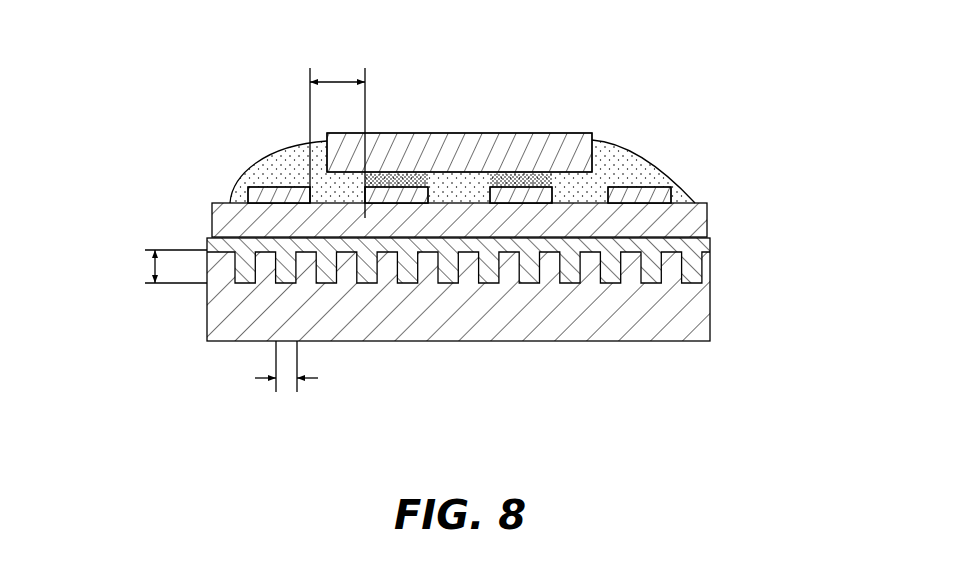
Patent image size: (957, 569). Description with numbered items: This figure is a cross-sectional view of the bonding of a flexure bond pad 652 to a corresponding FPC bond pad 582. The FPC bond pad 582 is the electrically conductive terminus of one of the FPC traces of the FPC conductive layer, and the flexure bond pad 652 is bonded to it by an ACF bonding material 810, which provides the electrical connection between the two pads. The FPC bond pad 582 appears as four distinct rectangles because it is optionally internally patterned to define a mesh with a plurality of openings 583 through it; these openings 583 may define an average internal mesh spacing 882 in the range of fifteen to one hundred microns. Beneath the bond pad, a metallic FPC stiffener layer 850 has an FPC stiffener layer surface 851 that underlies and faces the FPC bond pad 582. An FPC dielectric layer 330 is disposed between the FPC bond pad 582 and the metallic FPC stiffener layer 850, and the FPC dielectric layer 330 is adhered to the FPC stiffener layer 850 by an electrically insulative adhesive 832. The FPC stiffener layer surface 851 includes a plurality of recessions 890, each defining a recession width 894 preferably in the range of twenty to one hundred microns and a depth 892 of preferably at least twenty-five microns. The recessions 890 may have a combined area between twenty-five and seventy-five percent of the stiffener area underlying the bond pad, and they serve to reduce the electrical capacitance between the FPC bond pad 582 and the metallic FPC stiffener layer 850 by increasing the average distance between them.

The FPC dielectric layer 330 is at (693, 223).
The FPC bond pad 582 is at (265, 250).
The openings 583 is at (368, 180).
The flexure bond pad 652 is at (540, 153).
The ACF bonding material 810 is at (627, 157).
The electrically insulative adhesive 832 is at (703, 242).
The metallic FPC stiffener layer 850 is at (688, 317).
The FPC stiffener layer surface 851 is at (250, 178).
The average internal mesh spacing 882 is at (337, 82).
The recessions 890 is at (447, 268).
The depth 892 is at (148, 266).
The recession width 894 is at (263, 378).